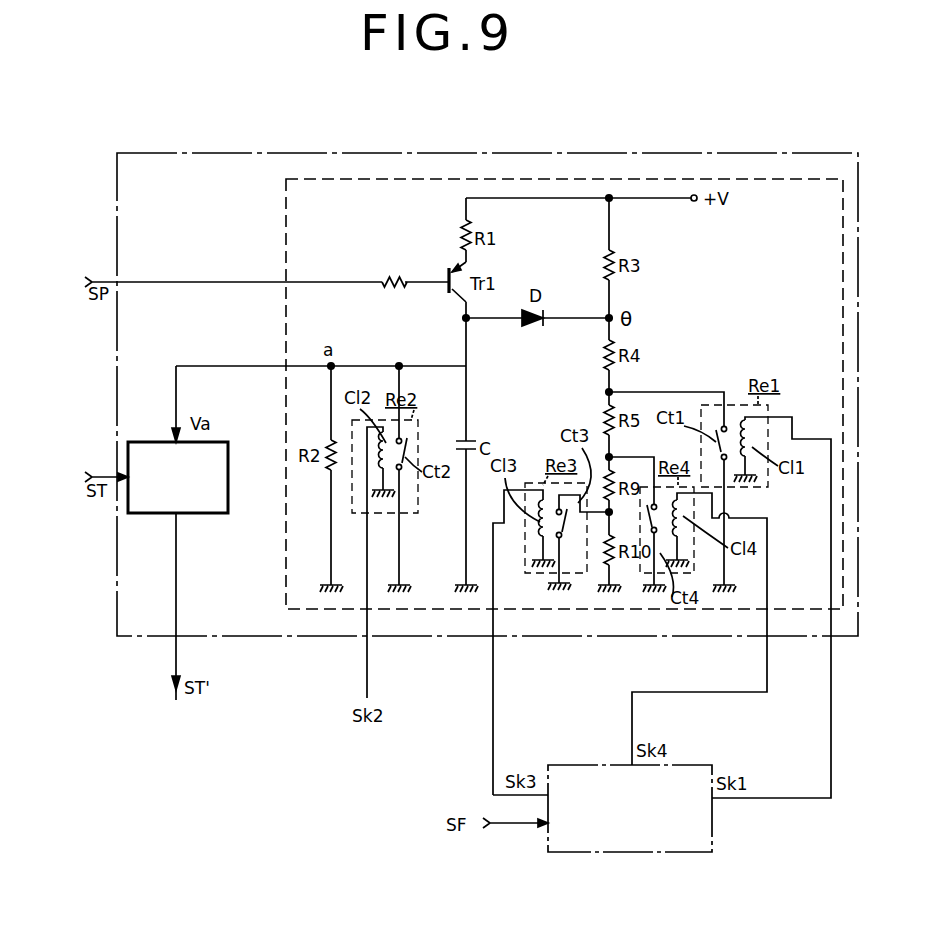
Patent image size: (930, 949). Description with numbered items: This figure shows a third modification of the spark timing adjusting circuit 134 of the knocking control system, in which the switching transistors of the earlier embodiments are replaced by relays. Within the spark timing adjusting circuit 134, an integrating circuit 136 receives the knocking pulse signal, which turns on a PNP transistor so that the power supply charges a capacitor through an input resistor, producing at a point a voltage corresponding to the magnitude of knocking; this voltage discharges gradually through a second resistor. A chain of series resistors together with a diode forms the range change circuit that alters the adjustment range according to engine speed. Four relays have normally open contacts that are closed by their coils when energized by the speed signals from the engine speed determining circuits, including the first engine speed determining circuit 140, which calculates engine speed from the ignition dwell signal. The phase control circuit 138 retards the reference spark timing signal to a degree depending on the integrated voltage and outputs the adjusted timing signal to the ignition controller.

The spark timing adjusting circuit 134 is at (620, 157).
The integrating circuit 136 is at (286, 202).
The phase control circuit 138 is at (228, 480).
The first engine speed determining circuit 140 is at (712, 842).